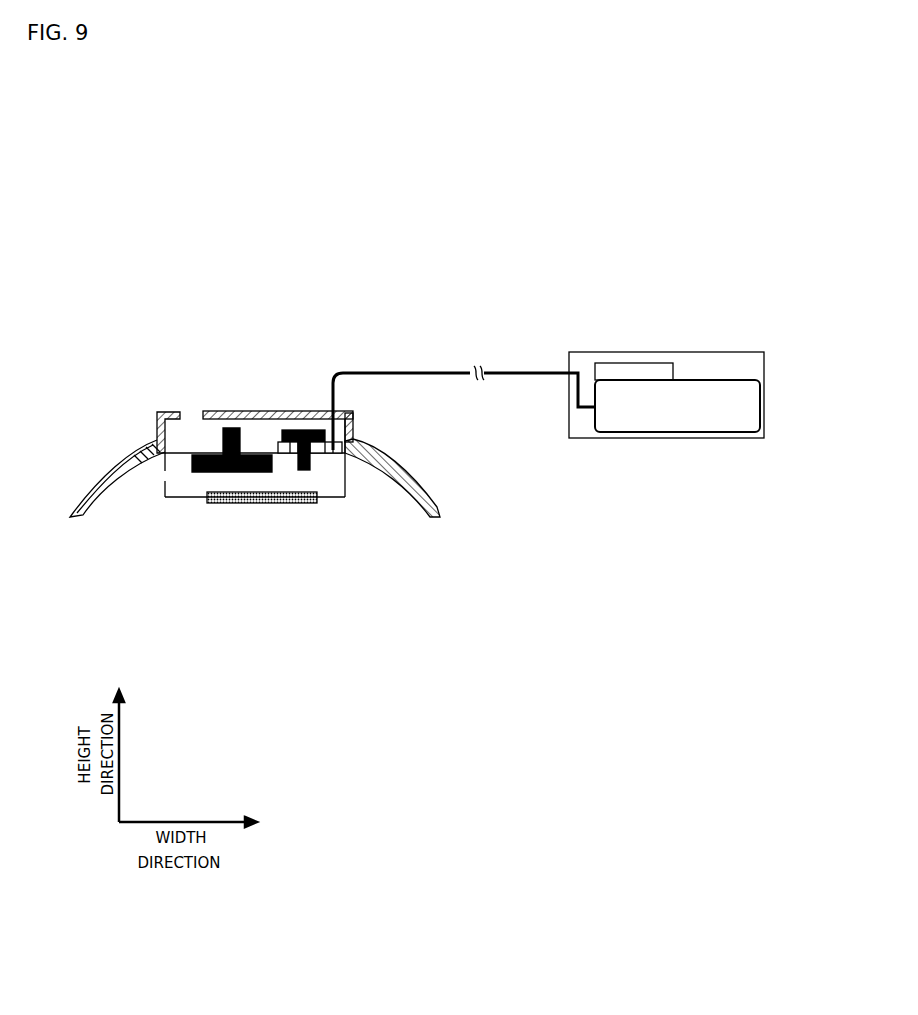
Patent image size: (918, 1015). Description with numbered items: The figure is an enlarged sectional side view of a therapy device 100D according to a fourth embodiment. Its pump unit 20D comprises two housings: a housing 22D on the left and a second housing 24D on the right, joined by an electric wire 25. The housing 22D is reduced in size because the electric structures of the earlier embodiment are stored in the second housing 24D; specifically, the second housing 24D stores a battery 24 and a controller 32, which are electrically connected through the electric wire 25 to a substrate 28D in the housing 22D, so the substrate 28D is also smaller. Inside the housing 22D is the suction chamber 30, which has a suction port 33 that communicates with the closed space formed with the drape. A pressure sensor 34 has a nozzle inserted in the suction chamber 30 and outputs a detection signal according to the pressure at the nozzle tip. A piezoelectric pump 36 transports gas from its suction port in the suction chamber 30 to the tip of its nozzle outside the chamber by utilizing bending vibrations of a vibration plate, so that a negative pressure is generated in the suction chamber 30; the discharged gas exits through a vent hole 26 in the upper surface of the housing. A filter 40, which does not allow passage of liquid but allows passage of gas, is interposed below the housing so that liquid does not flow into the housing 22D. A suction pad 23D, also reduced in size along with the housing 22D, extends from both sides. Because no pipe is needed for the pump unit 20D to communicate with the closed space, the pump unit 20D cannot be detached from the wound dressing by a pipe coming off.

The therapy device 100D is at (607, 182).
The pump unit 20D is at (592, 263).
The housing 22D is at (345, 477).
The suction pad 23D is at (418, 484).
The battery 24 is at (708, 403).
The second housing 24D is at (766, 350).
The electric wire 25 is at (515, 373).
The vent hole 26 is at (192, 395).
The substrate 28D is at (353, 441).
The suction chamber 30 is at (328, 483).
The controller 32 is at (632, 366).
The suction port 33 is at (170, 484).
The pressure sensor 34 is at (296, 438).
The piezoelectric pump 36 is at (240, 438).
The filter 40 is at (272, 503).